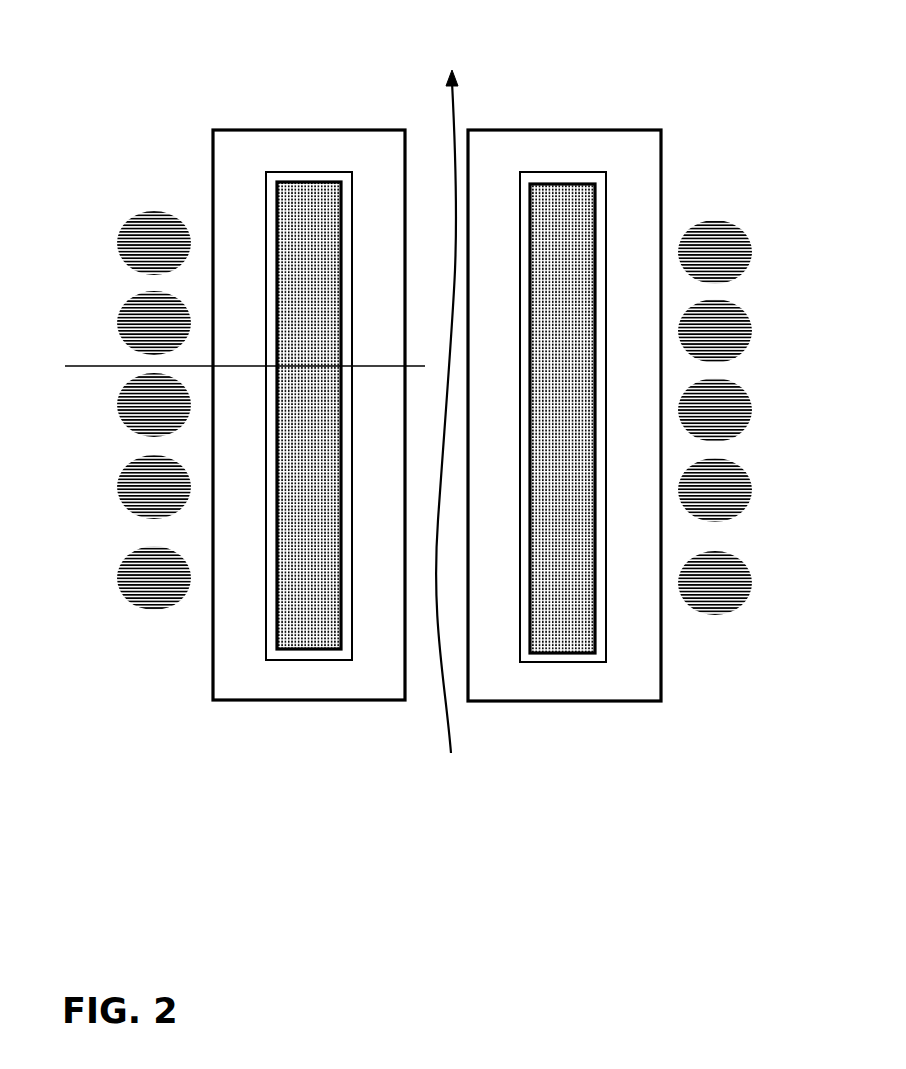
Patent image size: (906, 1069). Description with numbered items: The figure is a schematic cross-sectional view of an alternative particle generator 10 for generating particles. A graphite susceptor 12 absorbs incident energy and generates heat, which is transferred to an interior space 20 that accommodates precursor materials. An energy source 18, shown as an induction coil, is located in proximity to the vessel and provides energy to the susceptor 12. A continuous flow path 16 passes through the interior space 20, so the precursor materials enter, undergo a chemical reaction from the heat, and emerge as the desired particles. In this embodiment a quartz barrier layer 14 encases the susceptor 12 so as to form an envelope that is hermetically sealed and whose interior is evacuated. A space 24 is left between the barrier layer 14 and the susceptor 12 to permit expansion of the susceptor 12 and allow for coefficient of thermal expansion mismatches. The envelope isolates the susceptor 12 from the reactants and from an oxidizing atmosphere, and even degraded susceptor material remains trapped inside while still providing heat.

The particle generator 10 is at (663, 92).
The susceptor 12 is at (298, 212).
The barrier layer 14 is at (509, 629).
The continuous flow path 16 is at (450, 437).
The energy source 18 is at (150, 578).
The interior space 20 is at (226, 370).
The space 24 is at (271, 647).